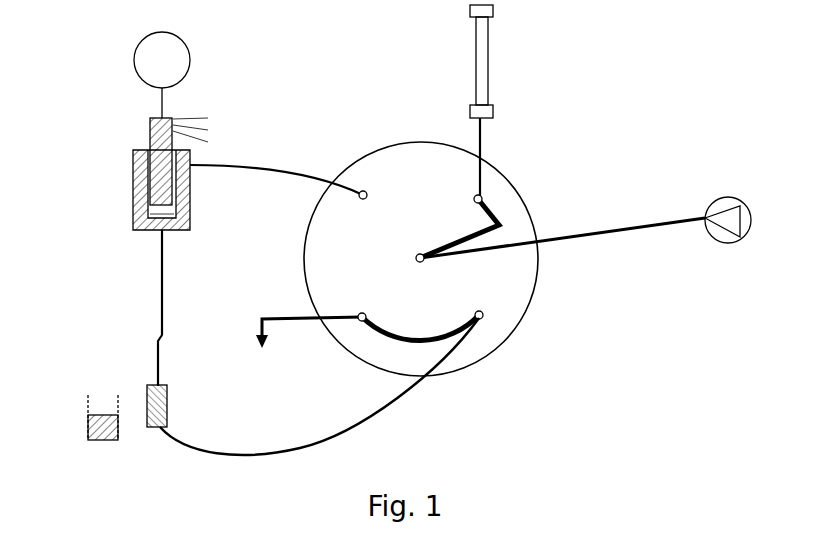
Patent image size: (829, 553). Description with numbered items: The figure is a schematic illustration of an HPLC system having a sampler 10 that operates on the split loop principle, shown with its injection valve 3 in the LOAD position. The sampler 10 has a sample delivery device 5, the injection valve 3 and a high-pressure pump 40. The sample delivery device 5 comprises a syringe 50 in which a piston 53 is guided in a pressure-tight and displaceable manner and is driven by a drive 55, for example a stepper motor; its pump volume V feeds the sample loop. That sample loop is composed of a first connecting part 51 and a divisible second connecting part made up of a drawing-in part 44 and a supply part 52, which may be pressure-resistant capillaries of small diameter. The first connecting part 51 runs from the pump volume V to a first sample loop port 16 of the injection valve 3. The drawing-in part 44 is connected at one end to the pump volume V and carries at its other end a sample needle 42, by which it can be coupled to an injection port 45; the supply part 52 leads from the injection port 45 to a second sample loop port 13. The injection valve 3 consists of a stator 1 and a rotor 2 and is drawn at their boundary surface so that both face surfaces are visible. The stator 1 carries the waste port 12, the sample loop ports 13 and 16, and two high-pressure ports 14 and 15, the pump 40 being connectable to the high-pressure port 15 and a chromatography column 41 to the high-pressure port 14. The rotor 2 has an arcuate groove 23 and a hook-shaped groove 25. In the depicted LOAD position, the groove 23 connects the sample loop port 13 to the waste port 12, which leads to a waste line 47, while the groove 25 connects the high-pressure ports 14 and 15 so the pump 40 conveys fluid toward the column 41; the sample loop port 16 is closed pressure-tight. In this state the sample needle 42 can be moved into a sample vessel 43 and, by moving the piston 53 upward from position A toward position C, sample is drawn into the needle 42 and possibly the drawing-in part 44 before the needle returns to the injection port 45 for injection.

The stator 1 is at (376, 259).
The rotor 2 is at (304, 250).
The injection valve 3 is at (547, 302).
The sample delivery device 5 is at (122, 104).
The sampler 10 is at (573, 92).
The waste port 12 is at (358, 322).
The second sample loop port 13 is at (483, 320).
The high-pressure port 14 is at (483, 199).
The high-pressure port 15 is at (428, 262).
The first sample loop port 16 is at (362, 190).
The arcuate groove 23 is at (435, 341).
The hook-shaped groove 25 is at (455, 235).
The high-pressure pump 40 is at (712, 239).
The chromatography column 41 is at (494, 48).
The sample needle 42 is at (375, 425).
The sample vessel 43 is at (102, 442).
The drawing-in part 44 is at (164, 391).
The injection port 45 is at (150, 382).
The waste line 47 is at (258, 333).
The syringe 50 is at (133, 197).
The first connecting part 51 is at (280, 162).
The supply part 52 is at (319, 400).
The piston 53 is at (150, 137).
The drive 55 is at (191, 60).
The pump volume V is at (152, 216).